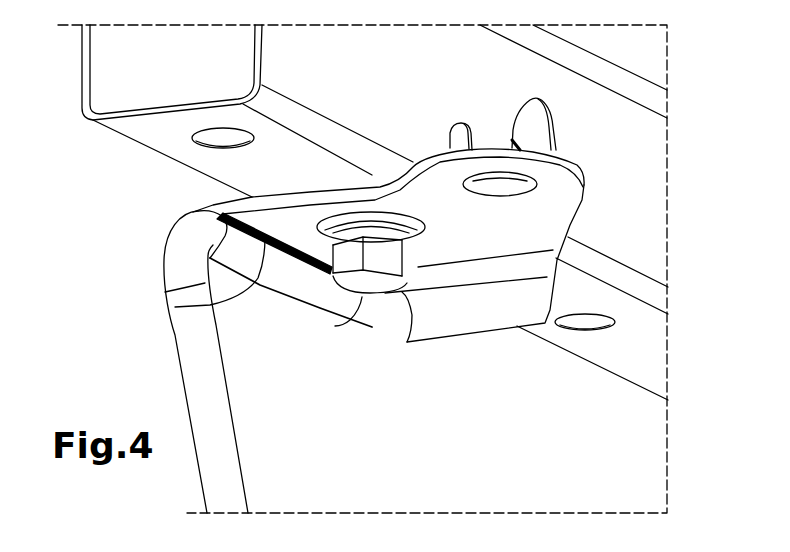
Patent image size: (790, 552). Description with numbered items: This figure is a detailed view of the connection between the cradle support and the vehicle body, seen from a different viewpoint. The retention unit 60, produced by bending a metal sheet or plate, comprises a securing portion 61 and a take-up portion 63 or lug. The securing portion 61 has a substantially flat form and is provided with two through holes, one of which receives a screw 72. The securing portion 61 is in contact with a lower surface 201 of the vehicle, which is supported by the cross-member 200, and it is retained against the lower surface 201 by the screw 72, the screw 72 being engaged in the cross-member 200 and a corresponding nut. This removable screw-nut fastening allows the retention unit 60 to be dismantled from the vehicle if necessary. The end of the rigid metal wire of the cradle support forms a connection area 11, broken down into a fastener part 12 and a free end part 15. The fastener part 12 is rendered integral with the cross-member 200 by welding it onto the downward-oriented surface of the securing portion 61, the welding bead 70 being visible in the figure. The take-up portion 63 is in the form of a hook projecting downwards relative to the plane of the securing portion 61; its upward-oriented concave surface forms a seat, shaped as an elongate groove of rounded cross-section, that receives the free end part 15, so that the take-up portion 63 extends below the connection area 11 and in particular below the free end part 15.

The cross-member 200 is at (97, 164).
The lower surface 201 is at (623, 370).
The retention unit 60 is at (358, 272).
The securing portion 61 is at (213, 205).
The take-up portion 63 is at (497, 330).
The connection area 11 is at (293, 342).
The fastener part 12 is at (280, 277).
The free end part 15 is at (372, 316).
The screw 72 is at (380, 293).
The welding bead 70 is at (175, 307).